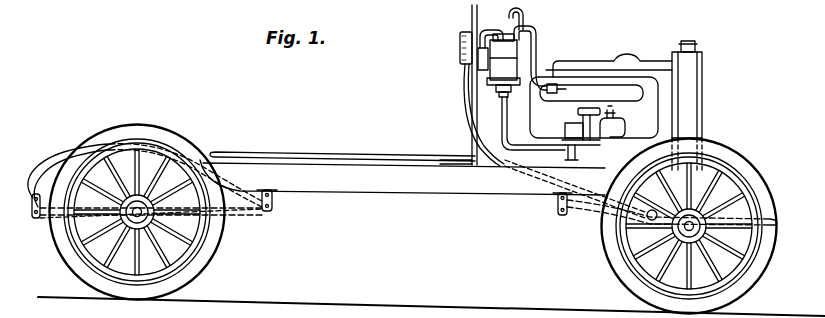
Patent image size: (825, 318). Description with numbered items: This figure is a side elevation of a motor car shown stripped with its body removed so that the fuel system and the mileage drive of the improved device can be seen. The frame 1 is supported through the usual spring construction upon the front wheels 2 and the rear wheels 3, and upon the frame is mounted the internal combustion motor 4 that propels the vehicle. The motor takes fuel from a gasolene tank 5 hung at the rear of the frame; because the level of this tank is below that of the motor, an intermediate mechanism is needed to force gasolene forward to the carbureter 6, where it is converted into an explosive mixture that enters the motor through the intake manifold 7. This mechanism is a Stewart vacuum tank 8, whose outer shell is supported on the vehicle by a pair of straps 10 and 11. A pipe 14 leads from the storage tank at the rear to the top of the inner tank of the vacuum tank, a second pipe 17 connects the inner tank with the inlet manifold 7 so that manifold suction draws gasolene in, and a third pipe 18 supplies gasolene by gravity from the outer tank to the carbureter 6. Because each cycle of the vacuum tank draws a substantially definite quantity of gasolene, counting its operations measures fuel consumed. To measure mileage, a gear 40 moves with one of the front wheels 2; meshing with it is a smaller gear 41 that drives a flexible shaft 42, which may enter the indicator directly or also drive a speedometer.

The frame 1 is at (397, 193).
The front wheels 2 is at (620, 265).
The rear wheels 3 is at (198, 262).
The internal combustion motor 4 is at (650, 104).
The gasolene tank 5 is at (50, 172).
The carbureter 6 is at (585, 118).
The intake manifold 7 is at (585, 93).
The Stewart vacuum tank 8 is at (528, 27).
The strap 10 is at (506, 58).
The strap 11 is at (503, 92).
The pipe 14 is at (309, 151).
The second pipe 17 is at (534, 55).
The third pipe 18 is at (506, 160).
The gear 40 is at (722, 205).
The smaller gear 41 is at (646, 218).
The flexible shaft 42 is at (558, 205).